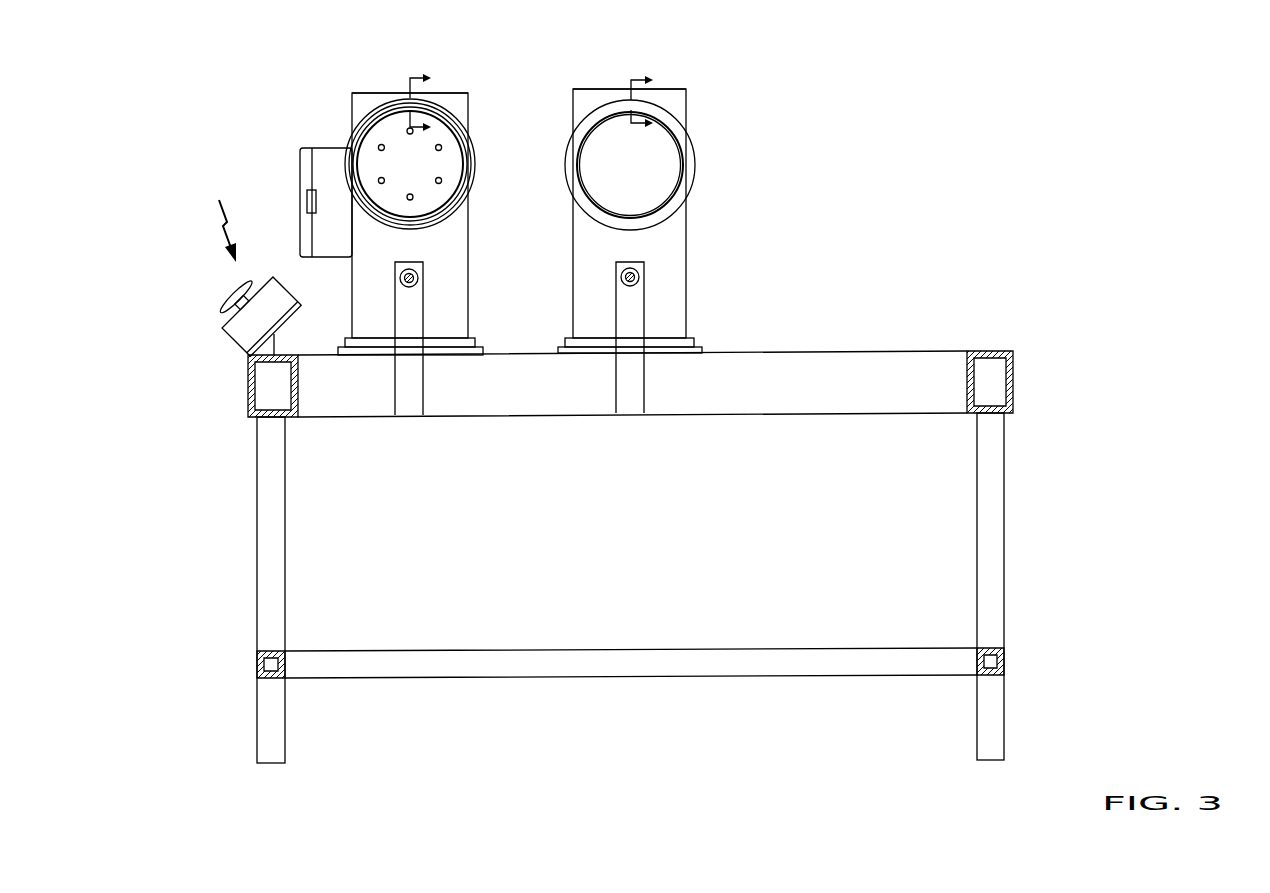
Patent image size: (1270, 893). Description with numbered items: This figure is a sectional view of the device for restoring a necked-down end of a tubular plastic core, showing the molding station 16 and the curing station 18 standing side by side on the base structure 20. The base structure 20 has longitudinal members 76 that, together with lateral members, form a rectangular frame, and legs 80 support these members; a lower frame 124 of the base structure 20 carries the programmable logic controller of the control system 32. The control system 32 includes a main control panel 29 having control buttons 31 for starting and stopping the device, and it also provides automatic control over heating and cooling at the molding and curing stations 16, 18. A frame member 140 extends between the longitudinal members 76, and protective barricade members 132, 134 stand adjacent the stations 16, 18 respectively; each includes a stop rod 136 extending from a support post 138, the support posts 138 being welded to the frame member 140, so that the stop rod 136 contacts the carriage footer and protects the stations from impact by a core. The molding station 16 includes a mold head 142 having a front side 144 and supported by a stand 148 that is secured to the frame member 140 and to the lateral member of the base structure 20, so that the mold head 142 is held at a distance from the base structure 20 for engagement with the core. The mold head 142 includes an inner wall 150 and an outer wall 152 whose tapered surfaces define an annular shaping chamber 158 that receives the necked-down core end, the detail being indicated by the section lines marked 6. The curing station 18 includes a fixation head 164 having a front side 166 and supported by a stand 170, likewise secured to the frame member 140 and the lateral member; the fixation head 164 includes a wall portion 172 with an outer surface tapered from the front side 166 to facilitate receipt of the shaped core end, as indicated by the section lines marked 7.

The molding station 16 is at (358, 100).
The curing station 18 is at (588, 98).
The base structure 20 is at (626, 522).
The main control panel 29 is at (240, 335).
The control buttons 31 is at (236, 292).
The control system 32 is at (222, 216).
The longitudinal members 76 is at (248, 380).
The legs 80 is at (272, 560).
The lower frame 124 is at (655, 663).
The protective barricade member 132 is at (410, 402).
The protective barricade member 134 is at (630, 403).
The stop rod 136 is at (420, 277).
The support post 138 is at (412, 308).
The frame member 140 is at (912, 372).
The mold head 142 is at (350, 138).
The front side 144 is at (453, 113).
The stand 148 is at (377, 100).
The inner wall 150 is at (468, 167).
The outer wall 152 is at (447, 190).
The annular shaping chamber 158 is at (467, 145).
The fixation head 164 is at (675, 117).
The front side 166 is at (667, 168).
The stand 170 is at (603, 95).
The wall portion 172 is at (673, 200).
The section line 6- 6 is at (429, 110).
The section line 7- 7 is at (647, 108).